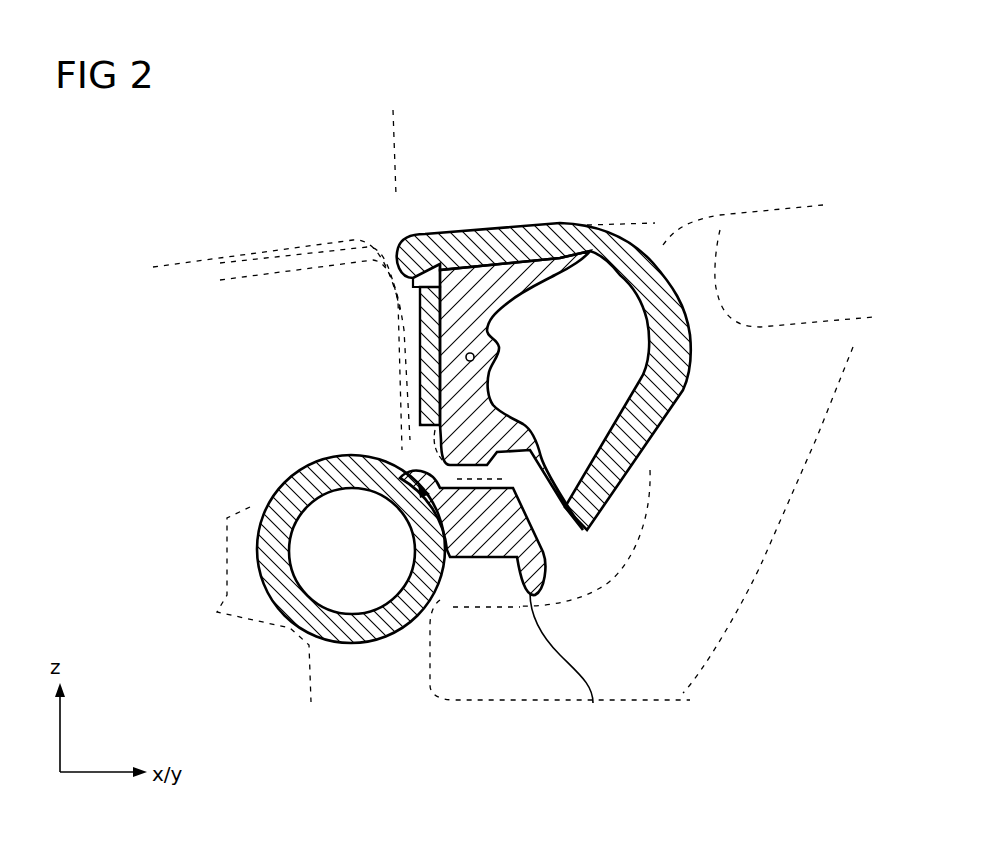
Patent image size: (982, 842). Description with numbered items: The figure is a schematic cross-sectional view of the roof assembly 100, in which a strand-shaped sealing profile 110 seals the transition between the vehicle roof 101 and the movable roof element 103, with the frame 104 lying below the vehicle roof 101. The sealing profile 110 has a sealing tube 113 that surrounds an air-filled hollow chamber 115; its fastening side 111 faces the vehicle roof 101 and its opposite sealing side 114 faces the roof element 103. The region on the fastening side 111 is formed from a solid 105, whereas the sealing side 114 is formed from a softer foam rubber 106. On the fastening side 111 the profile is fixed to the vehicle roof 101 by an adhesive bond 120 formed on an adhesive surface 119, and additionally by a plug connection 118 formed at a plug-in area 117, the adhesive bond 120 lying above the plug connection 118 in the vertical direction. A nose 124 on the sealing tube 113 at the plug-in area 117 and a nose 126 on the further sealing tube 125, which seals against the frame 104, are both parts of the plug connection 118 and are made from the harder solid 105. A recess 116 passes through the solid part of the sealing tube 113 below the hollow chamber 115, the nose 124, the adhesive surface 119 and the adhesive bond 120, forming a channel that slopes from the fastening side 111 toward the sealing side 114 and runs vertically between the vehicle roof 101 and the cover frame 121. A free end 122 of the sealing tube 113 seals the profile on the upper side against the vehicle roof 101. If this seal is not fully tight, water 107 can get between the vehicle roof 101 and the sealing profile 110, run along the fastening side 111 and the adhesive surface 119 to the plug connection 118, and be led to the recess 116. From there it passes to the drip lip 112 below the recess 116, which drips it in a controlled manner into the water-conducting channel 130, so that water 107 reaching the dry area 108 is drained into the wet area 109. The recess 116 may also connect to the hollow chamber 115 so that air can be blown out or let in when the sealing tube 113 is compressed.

The roof assembly 100 is at (645, 172).
The vehicle roof 101 is at (406, 380).
The roof element 103 is at (803, 327).
The frame 104 is at (226, 598).
The solid 105 is at (492, 333).
The foam rubber 106 is at (300, 468).
The water 107 is at (566, 528).
The dry area 108 is at (363, 145).
The wet area 109 is at (468, 145).
The sealing profile 110 is at (550, 228).
The fastening side 111 is at (465, 378).
The drip lip 112 is at (532, 590).
The sealing tube 113 is at (622, 468).
The sealing side 114 is at (698, 375).
The hollow chamber 115 is at (628, 372).
The recess 116 is at (518, 560).
The plug-in area 117 is at (410, 525).
The plug connection 118 is at (422, 457).
The adhesive surface 119 is at (397, 285).
The adhesive bond 120 is at (418, 336).
The cover frame 121 is at (683, 695).
The free end 122 is at (402, 245).
The nose 124 is at (525, 445).
The further sealing tube 125 is at (292, 612).
The nose 126 is at (368, 489).
The water-conducting channel 130 is at (593, 703).